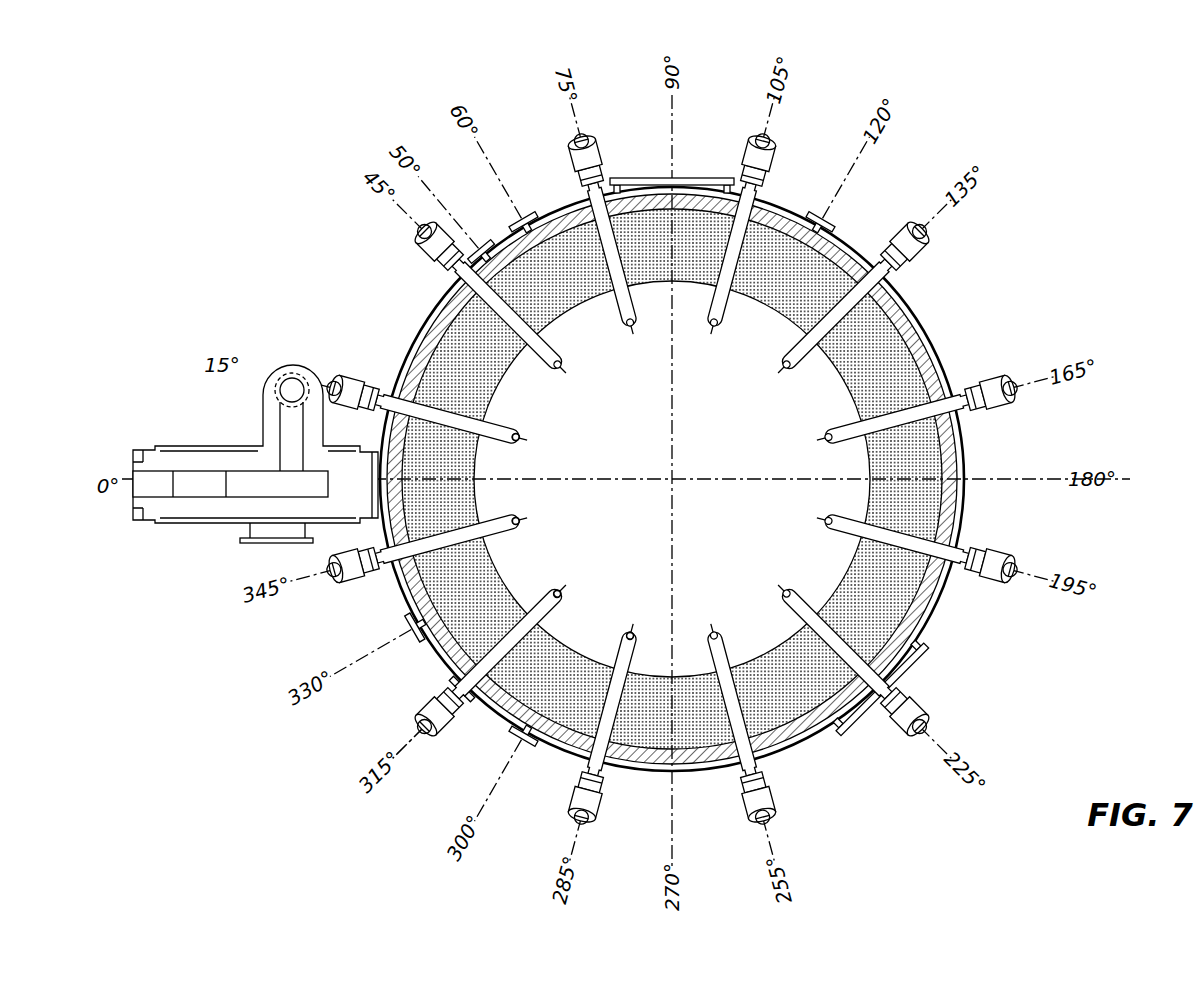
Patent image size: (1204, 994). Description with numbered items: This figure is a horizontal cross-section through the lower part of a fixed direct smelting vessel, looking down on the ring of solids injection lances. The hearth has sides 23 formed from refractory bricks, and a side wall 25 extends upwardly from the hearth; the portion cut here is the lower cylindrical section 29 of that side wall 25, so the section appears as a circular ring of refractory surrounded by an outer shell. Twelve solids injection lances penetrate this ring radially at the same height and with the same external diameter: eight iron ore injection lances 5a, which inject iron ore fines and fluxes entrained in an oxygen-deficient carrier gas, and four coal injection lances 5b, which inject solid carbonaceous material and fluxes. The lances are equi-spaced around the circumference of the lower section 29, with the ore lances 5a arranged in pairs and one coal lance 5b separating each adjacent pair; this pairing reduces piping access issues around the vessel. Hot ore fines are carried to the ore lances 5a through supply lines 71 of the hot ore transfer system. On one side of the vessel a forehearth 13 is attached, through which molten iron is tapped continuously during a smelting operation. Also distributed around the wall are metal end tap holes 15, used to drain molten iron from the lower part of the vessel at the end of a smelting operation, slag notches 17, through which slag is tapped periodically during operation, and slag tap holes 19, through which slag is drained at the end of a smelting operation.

The iron ore injection lance 5a is at (633, 328).
The coal injection lance 5b is at (560, 368).
The forehearth 13 is at (200, 430).
The metal end tap hole 15 is at (406, 630).
The slag notch 17 is at (522, 212).
The slag tap hole 19 is at (476, 242).
The hearth side 23 is at (408, 326).
The side wall 25 is at (455, 338).
The lower cylindrical section 29 is at (435, 368).
The supply line 71 is at (536, 524).